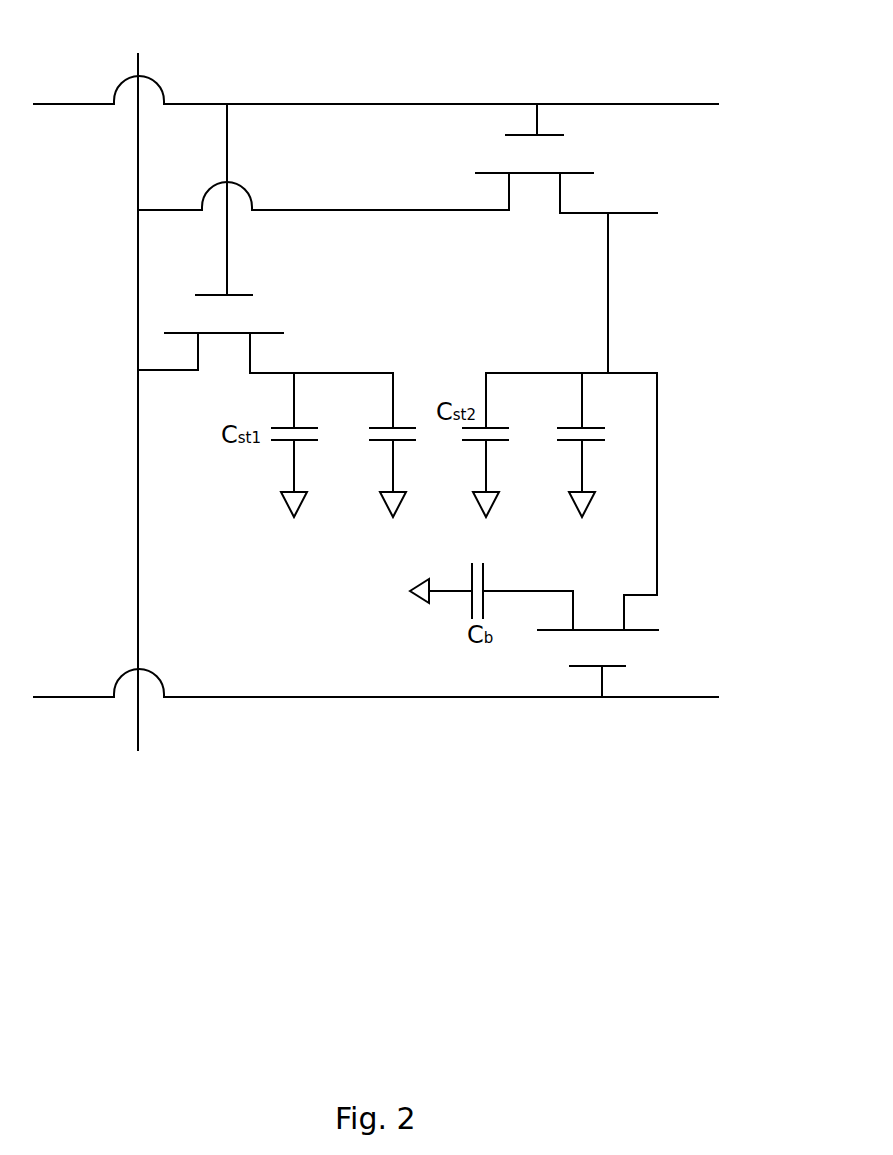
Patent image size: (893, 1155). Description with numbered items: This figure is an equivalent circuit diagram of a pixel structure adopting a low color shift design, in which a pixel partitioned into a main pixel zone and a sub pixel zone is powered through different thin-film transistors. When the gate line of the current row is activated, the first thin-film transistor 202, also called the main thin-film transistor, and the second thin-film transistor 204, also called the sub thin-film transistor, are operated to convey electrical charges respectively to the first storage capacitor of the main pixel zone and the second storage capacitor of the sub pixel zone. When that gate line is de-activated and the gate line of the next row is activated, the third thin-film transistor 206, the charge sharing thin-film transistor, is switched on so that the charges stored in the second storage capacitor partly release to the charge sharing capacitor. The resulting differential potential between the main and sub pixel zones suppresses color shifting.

The first thin-film transistor 202 is at (208, 315).
The second thin-film transistor 204 is at (512, 159).
The third thin-film transistor 206 is at (613, 646).